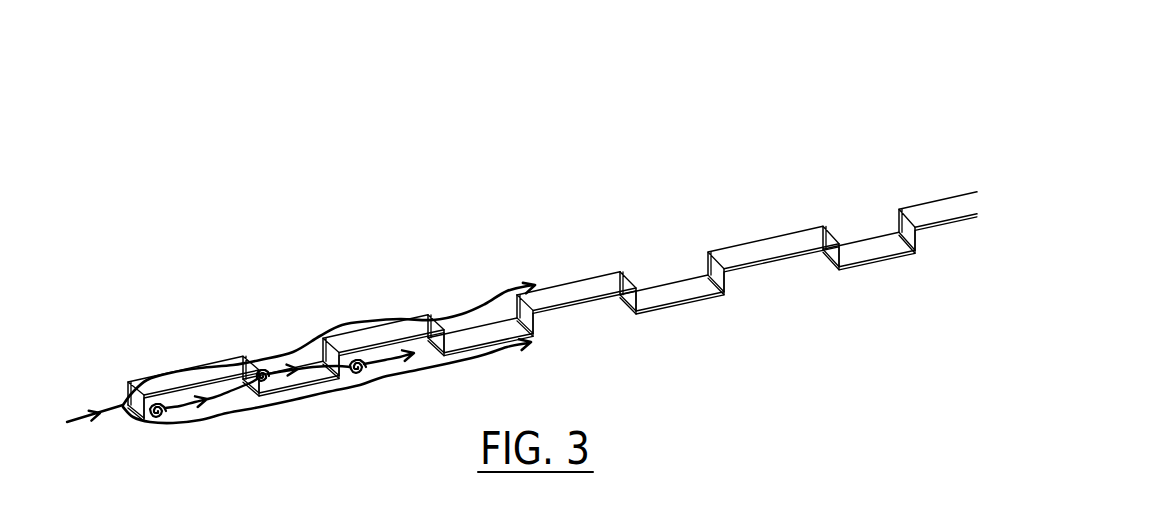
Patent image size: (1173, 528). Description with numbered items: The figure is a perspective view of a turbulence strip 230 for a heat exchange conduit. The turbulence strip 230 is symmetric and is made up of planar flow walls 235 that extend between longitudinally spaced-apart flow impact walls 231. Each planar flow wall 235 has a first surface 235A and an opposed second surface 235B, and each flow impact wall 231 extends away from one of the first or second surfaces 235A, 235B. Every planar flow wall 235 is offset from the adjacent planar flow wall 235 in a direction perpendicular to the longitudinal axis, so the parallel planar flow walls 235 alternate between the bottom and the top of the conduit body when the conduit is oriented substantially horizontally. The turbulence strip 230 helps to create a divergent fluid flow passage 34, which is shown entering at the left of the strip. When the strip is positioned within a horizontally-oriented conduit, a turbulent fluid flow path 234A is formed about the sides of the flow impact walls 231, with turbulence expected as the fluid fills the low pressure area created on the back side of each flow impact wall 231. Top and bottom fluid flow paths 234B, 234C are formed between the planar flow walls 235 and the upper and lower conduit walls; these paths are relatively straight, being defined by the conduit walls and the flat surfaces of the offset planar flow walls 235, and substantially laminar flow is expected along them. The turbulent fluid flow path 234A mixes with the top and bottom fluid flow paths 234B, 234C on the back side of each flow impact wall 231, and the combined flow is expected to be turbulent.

The turbulence strip 230 is at (416, 172).
The planar flow wall 235 is at (185, 386).
The flow impact wall 231 is at (327, 350).
The first surface 235A is at (581, 294).
The second surface 235B is at (607, 303).
The divergent fluid flow passage 34 is at (102, 410).
The turbulent fluid flow path 234A is at (182, 400).
The top fluid flow path 234B is at (343, 326).
The bottom fluid flow path 234C is at (263, 407).